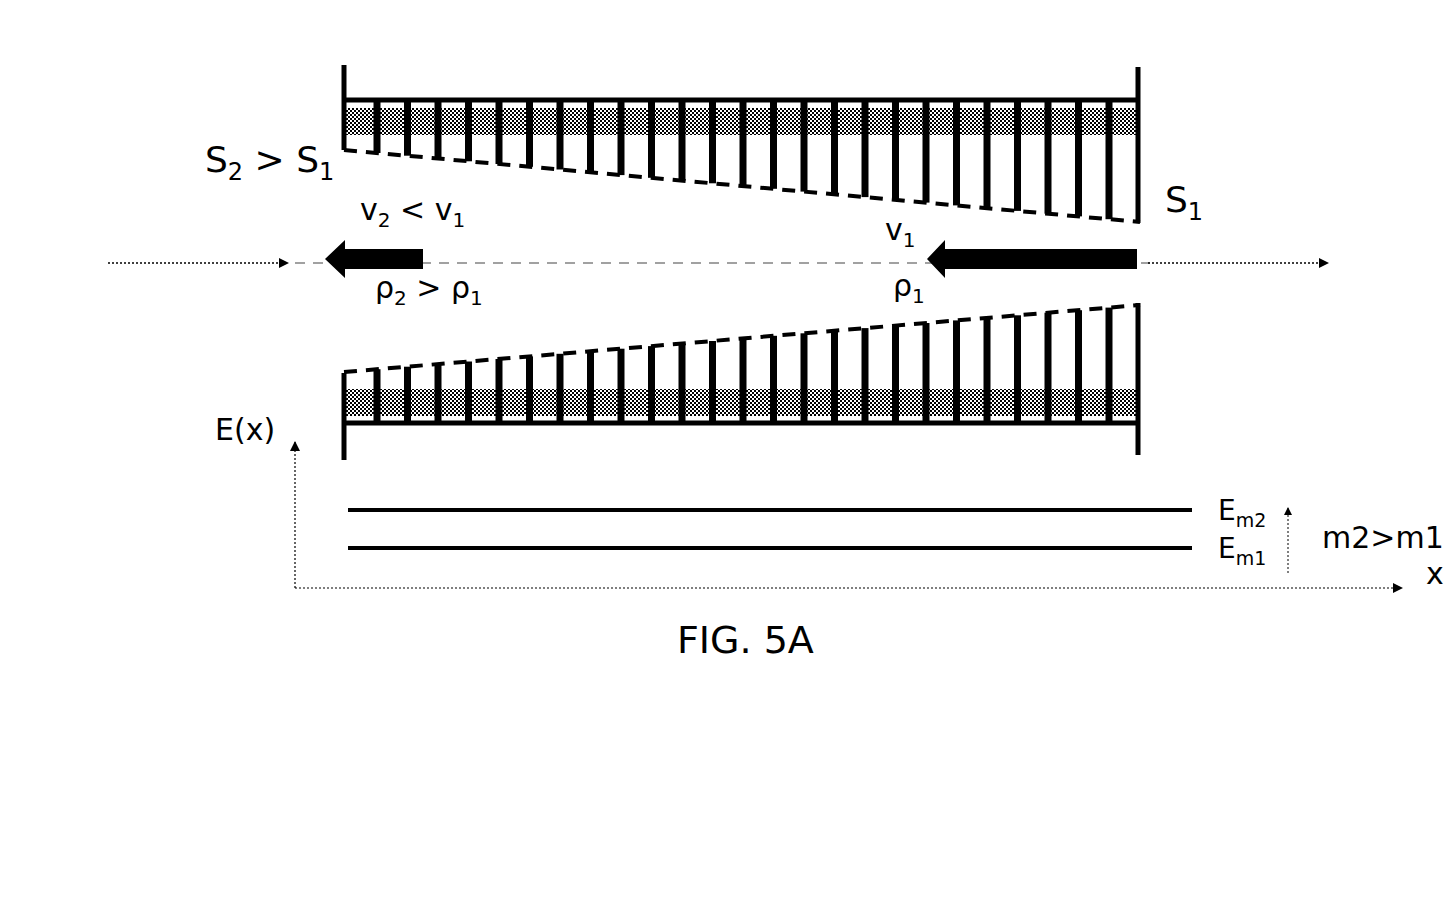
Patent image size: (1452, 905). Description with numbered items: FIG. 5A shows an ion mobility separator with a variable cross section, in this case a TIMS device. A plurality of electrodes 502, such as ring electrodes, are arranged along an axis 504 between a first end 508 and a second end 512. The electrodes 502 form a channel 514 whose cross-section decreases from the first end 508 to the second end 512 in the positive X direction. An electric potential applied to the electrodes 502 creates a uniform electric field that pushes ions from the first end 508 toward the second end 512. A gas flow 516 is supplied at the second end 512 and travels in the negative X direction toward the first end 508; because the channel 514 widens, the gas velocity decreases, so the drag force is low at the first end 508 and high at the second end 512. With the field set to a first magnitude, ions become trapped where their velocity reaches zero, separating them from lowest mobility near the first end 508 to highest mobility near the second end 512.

The electrodes 502 is at (742, 137).
The axis 504 is at (722, 159).
The first end 508 is at (318, 308).
The second end 512 is at (1154, 297).
The channel 514 is at (775, 309).
The gas flow 516 is at (1032, 157).